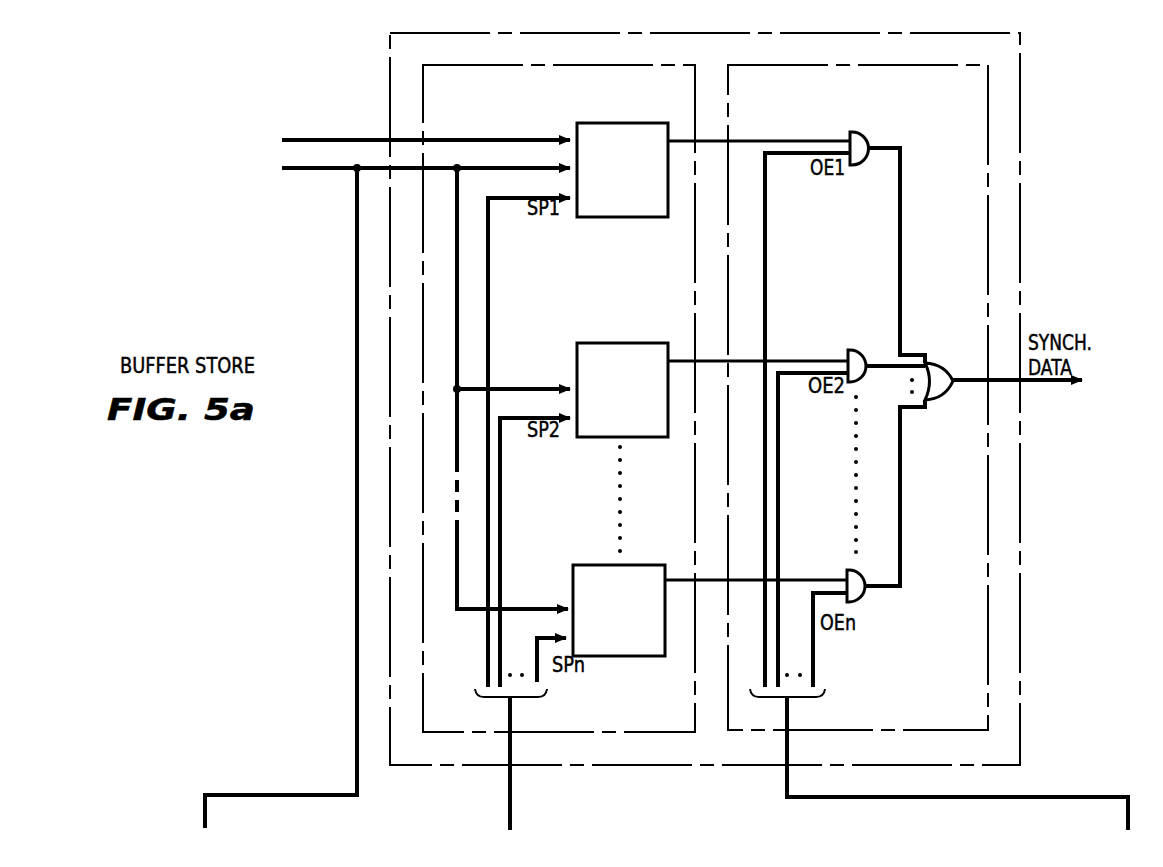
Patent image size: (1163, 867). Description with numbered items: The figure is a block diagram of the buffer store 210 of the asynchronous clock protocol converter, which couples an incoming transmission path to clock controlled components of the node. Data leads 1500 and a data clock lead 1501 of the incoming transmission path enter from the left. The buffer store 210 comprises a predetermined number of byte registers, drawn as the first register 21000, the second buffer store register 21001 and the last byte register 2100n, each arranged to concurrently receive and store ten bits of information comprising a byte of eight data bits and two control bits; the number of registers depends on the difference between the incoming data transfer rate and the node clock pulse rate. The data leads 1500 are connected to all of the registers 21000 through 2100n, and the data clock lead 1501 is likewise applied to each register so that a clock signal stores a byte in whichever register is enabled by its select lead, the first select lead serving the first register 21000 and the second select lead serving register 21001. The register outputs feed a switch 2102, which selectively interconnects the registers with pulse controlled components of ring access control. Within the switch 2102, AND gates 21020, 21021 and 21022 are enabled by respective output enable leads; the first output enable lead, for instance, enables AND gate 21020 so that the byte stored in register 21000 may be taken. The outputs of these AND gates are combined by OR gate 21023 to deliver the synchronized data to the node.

The buffer store 210 is at (700, 33).
The switch 2102 is at (858, 66).
The data leads 1500 is at (355, 139).
The data clock lead 1501 is at (312, 176).
The first register 21000 is at (622, 123).
The buffer store register 21001 is at (622, 343).
The byte register 2100n is at (597, 565).
The AND gate 21020 is at (866, 140).
The AND gate 21021 is at (856, 350).
The AND gate 21022 is at (858, 597).
The OR gate 21023 is at (937, 366).